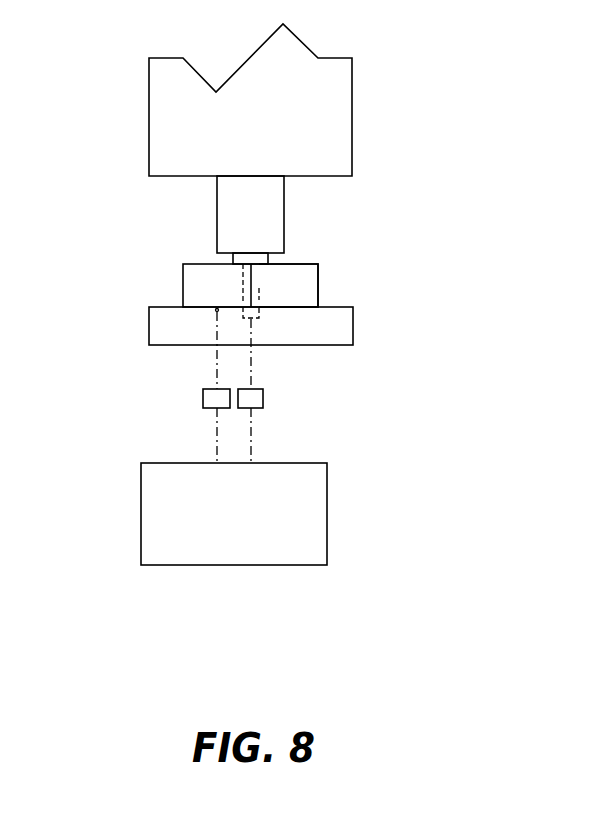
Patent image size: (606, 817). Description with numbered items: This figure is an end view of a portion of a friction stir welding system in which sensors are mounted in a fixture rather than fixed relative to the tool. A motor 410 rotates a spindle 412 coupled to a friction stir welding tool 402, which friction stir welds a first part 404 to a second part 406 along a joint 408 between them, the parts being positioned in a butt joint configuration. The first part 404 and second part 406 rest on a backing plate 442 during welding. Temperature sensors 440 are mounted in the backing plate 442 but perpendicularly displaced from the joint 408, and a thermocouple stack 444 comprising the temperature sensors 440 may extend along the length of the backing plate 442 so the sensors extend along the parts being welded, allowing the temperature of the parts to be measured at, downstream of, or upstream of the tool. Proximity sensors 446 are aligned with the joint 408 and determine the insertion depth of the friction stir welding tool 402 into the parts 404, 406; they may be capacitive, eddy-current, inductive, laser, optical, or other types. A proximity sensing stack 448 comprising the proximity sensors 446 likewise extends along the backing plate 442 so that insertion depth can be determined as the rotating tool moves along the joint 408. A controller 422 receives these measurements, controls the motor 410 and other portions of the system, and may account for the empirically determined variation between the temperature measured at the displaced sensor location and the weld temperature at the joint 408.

The motor 410 is at (196, 100).
The spindle 412 is at (315, 220).
The second part 406 is at (178, 288).
The first part 404 is at (370, 289).
The friction stir welding tool 402 is at (188, 266).
The joint 408 is at (309, 274).
The backing plate 442 is at (303, 340).
The temperature sensors 440 is at (150, 386).
The proximity sensors 446 is at (299, 385).
The thermocouple stack 444 is at (172, 406).
The proximity sensing stack 448 is at (301, 406).
The controller 422 is at (243, 544).